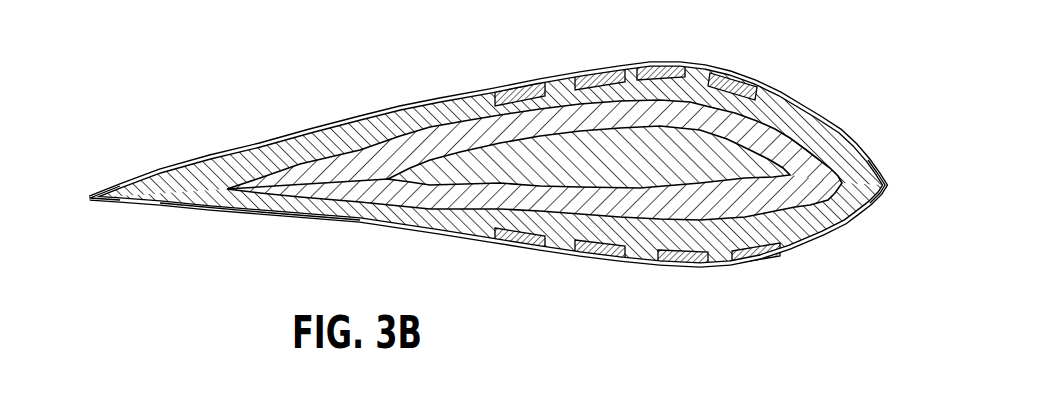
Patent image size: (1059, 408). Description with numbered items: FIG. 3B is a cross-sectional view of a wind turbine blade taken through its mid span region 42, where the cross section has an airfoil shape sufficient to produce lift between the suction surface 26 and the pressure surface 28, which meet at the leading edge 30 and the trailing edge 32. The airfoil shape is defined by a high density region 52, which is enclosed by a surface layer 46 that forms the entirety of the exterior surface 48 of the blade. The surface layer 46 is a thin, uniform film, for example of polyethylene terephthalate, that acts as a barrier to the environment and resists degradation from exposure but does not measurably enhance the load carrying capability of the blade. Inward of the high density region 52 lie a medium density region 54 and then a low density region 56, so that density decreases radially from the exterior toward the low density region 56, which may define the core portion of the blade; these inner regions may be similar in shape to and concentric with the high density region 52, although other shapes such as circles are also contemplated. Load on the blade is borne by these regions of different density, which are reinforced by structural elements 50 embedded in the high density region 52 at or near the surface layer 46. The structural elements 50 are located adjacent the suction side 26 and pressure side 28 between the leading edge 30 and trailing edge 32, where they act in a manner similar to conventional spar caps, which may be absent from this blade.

The suction surface 26 is at (440, 99).
The pressure surface 28 is at (427, 233).
The leading edge 30 is at (888, 193).
The trailing edge 32 is at (90, 198).
The mid span region 42 is at (814, 70).
The surface layer 46 is at (310, 217).
The exterior surface 48 is at (210, 210).
The structural elements 50 is at (513, 85).
The high density region 52 is at (838, 148).
The medium density region 54 is at (377, 150).
The low density region 56 is at (637, 178).